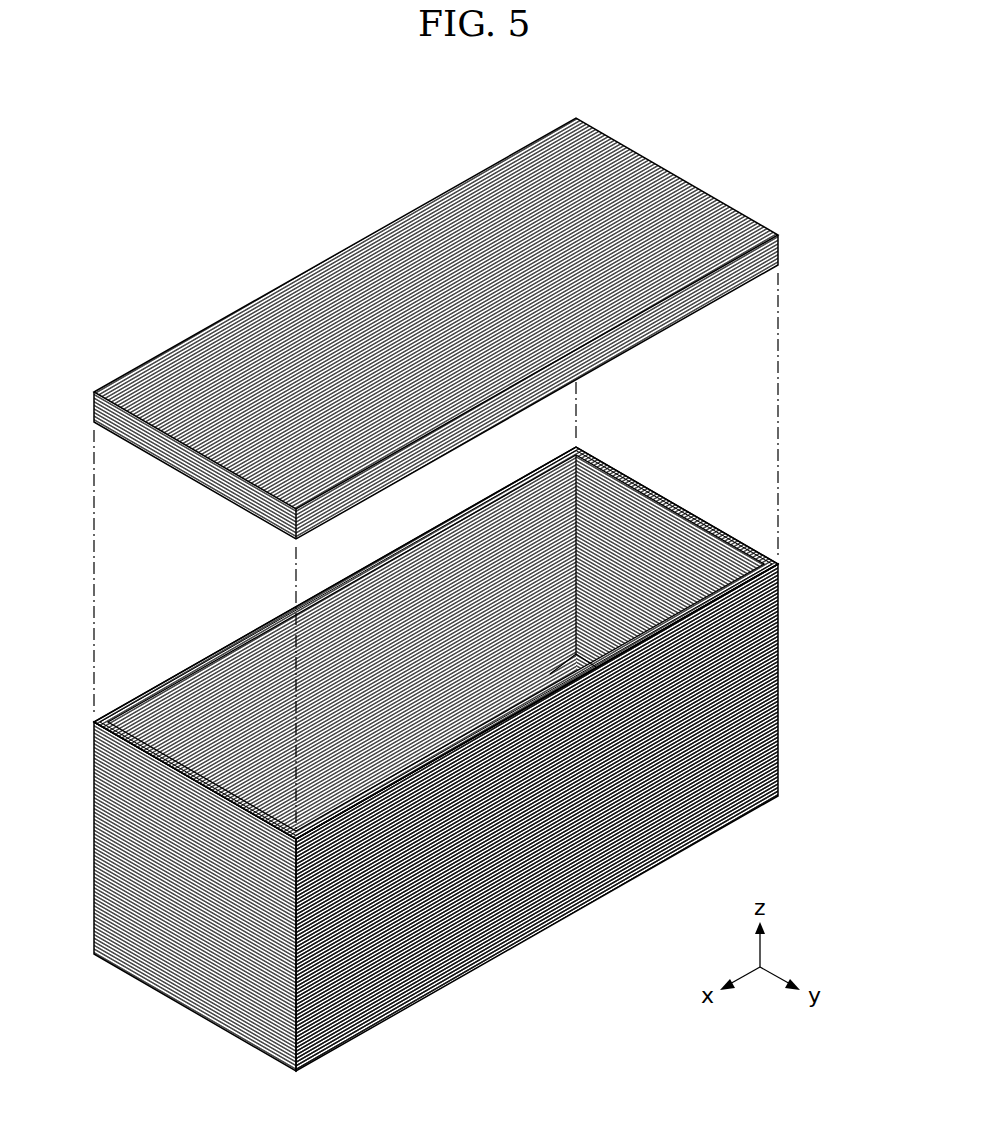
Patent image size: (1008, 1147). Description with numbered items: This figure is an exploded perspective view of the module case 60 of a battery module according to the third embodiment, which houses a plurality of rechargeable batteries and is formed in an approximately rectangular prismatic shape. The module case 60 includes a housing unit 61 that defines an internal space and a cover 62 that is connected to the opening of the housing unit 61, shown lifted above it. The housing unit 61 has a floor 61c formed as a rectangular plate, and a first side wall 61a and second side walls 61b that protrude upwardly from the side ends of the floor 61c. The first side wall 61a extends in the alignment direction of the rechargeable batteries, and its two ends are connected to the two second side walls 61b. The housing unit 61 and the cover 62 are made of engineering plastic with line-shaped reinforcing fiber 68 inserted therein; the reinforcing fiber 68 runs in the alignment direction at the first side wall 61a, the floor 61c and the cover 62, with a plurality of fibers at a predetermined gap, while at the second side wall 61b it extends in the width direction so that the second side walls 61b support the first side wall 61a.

The module case 60 is at (336, 136).
The housing unit 61 is at (475, 747).
The first side wall 61a is at (447, 940).
The second side wall 61b is at (188, 988).
The floor 61c is at (577, 660).
The cover 62 is at (436, 599).
The reinforcing fiber 68 is at (160, 374).